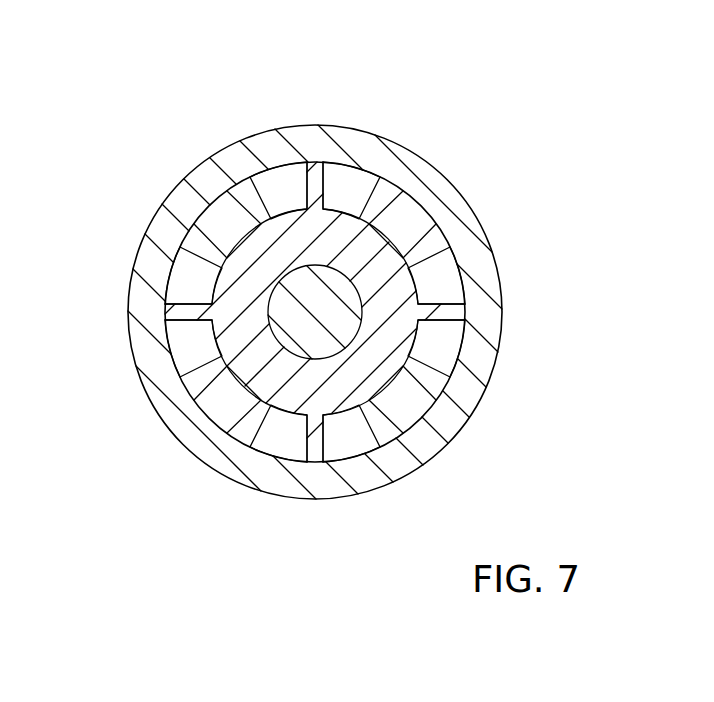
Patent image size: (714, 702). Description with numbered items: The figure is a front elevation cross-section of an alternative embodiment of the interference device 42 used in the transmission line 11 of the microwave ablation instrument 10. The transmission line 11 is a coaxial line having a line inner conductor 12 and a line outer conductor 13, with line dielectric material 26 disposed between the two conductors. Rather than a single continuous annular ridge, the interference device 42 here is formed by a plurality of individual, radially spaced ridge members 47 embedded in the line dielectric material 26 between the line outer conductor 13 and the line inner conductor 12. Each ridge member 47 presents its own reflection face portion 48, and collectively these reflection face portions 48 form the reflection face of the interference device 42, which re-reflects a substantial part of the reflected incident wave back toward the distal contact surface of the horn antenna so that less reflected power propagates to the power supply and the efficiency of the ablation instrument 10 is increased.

The microwave ablation instrument 10 is at (478, 103).
The transmission line 11 is at (470, 195).
The line inner conductor 12 is at (493, 322).
The line outer conductor 13 is at (298, 265).
The line dielectric material 26 is at (240, 292).
The interference device 42 is at (358, 168).
The ridge members 47 is at (240, 405).
The reflection face portions 48 is at (188, 352).